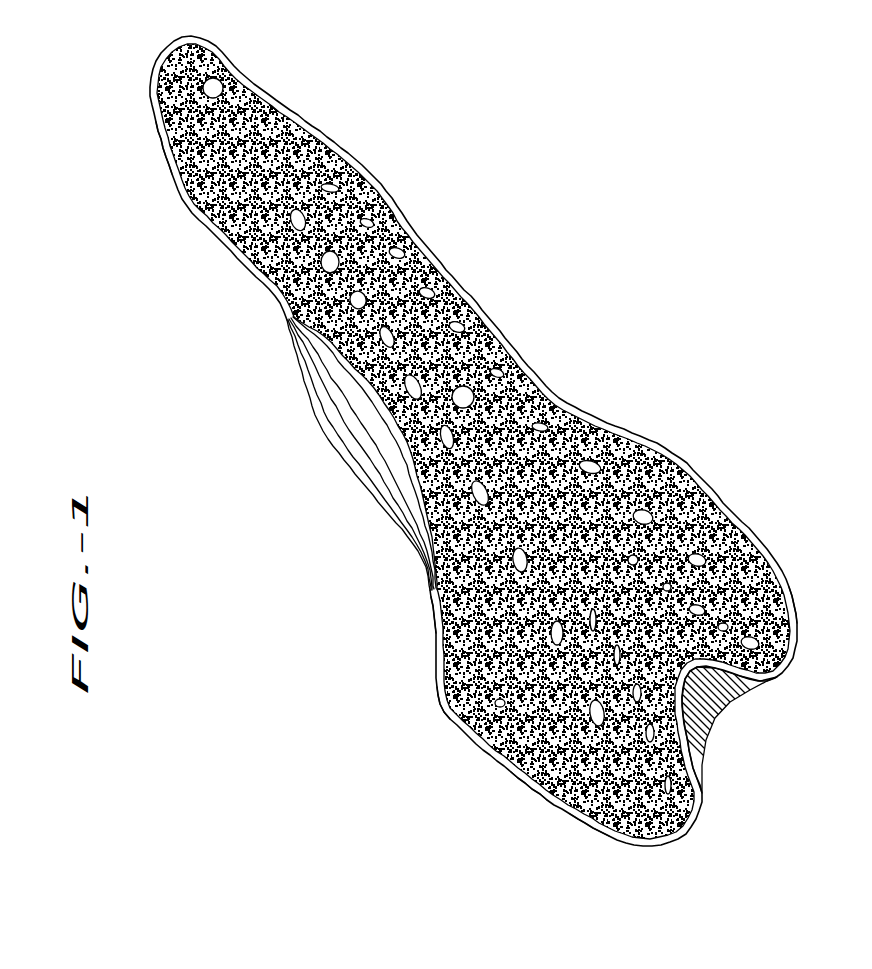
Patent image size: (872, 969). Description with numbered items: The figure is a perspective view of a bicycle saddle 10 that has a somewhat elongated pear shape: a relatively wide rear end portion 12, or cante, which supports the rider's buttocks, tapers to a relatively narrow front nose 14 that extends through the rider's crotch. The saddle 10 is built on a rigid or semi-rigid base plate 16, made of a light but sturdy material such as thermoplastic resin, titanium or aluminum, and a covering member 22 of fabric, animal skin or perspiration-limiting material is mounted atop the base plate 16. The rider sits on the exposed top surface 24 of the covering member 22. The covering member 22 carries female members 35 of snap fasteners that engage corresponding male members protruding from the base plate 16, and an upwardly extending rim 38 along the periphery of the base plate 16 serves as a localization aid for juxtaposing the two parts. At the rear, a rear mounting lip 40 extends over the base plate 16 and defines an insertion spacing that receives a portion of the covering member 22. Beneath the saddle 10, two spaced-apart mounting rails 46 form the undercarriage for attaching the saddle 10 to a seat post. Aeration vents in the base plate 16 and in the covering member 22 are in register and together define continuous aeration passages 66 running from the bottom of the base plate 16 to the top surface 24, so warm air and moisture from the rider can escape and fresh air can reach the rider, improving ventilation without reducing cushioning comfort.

The saddle 10 is at (657, 307).
The rear end portion 12 is at (792, 600).
The front nose 14 is at (162, 140).
The base plate 16 is at (443, 717).
The covering member 22 is at (534, 793).
The top surface 24 is at (590, 835).
The female member 35 is at (203, 86).
The upwardly extending rim 38 is at (440, 643).
The rear mounting lip 40 is at (722, 745).
The mounting rails 46 is at (360, 470).
The aeration passages 66 is at (379, 340).